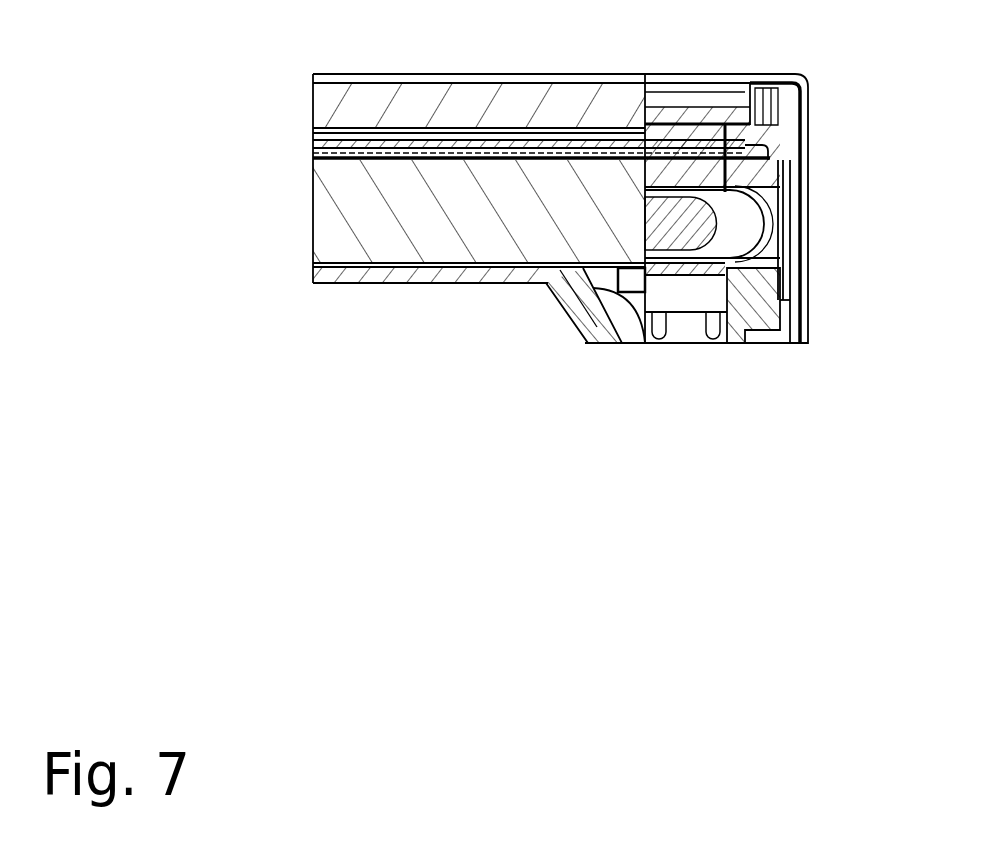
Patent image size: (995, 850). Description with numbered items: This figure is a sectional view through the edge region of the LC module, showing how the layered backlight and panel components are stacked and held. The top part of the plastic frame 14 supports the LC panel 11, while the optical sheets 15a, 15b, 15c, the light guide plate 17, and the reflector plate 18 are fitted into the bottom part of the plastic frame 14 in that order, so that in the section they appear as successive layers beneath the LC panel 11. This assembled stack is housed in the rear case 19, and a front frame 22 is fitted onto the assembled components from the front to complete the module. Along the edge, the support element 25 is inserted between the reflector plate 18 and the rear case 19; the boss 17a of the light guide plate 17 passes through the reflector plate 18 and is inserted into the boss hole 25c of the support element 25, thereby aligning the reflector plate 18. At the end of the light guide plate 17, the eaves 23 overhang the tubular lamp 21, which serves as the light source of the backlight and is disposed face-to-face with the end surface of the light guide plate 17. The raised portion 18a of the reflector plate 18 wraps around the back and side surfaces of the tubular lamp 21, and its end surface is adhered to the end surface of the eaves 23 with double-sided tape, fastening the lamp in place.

The LC panel 11 is at (570, 80).
The plastic frame 14 is at (793, 224).
The optical sheet 15a is at (313, 143).
The optical sheet 15b is at (313, 154).
The optical sheet 15c is at (318, 162).
The light guide plate 17 is at (368, 212).
The boss 17a is at (616, 294).
The reflector plate 18 is at (447, 274).
The raised portion 18a is at (790, 248).
The rear case 19 is at (637, 335).
The tubular lamp 21 is at (735, 212).
The front frame 22 is at (808, 125).
The eaves 23 is at (705, 112).
The support element 25 is at (778, 300).
The boss hole 25c is at (590, 343).